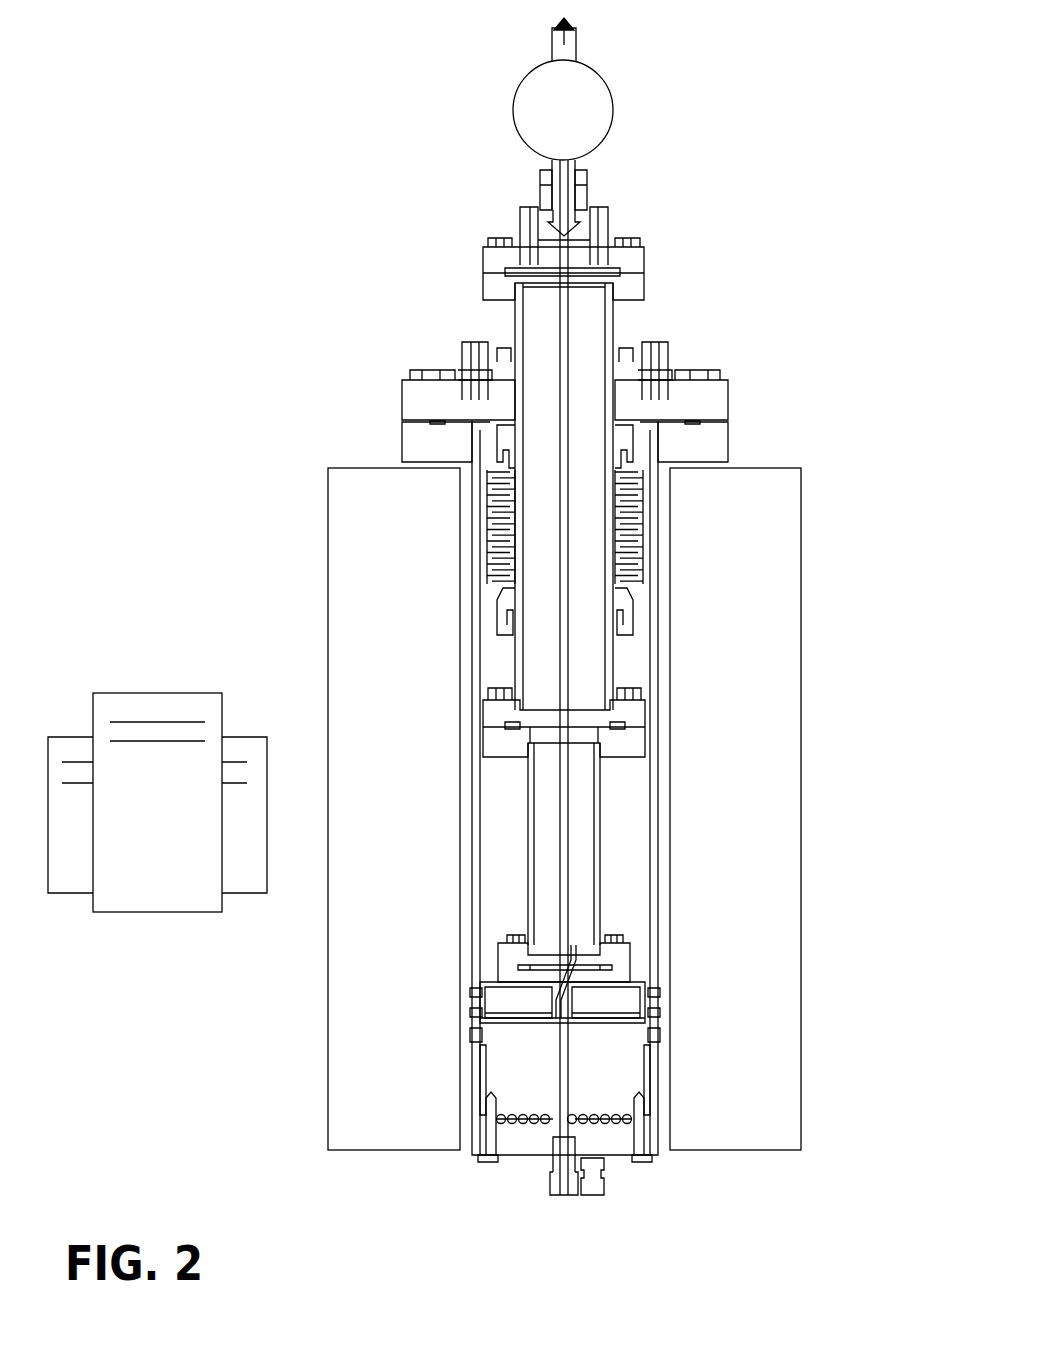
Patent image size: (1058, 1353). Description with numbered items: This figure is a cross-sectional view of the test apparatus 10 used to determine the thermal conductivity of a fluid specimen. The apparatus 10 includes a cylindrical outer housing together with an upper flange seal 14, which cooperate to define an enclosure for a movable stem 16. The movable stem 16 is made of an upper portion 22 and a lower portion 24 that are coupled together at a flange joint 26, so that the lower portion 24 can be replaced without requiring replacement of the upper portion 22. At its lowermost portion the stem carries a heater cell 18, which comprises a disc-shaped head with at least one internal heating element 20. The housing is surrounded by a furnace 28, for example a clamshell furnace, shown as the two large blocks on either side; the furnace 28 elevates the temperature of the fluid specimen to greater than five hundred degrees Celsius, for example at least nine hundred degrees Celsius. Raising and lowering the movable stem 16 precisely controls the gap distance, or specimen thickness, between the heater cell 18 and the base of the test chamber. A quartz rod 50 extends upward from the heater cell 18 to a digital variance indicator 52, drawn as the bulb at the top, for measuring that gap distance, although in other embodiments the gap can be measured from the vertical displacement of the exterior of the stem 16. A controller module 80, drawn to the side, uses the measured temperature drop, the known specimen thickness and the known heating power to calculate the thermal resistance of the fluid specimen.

The apparatus 10 is at (265, 247).
The upper flange seal 14 is at (735, 392).
The movable stem 16 is at (515, 322).
The heater cell 18 is at (633, 980).
The internal heating element 20 is at (628, 1003).
The upper portion 22 is at (608, 660).
The lower portion 24 is at (597, 795).
The flange joint 26 is at (638, 725).
The furnace 28 is at (327, 592).
The quartz rod 50 is at (563, 328).
The digital variance indicator 52 is at (610, 100).
The controller module 80 is at (157, 692).